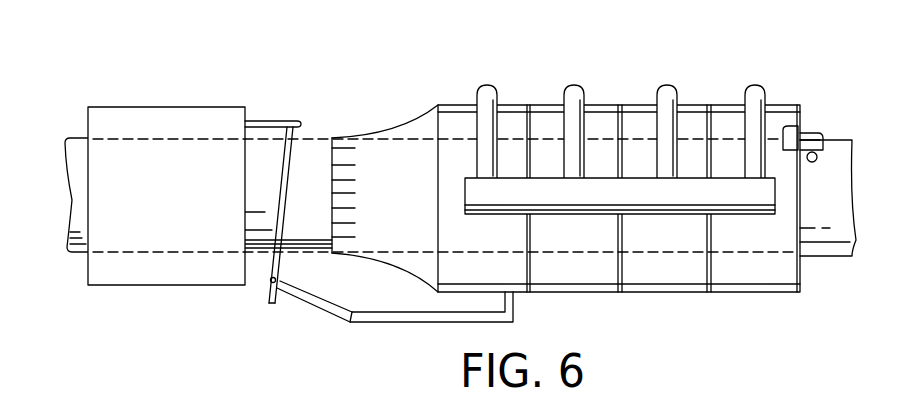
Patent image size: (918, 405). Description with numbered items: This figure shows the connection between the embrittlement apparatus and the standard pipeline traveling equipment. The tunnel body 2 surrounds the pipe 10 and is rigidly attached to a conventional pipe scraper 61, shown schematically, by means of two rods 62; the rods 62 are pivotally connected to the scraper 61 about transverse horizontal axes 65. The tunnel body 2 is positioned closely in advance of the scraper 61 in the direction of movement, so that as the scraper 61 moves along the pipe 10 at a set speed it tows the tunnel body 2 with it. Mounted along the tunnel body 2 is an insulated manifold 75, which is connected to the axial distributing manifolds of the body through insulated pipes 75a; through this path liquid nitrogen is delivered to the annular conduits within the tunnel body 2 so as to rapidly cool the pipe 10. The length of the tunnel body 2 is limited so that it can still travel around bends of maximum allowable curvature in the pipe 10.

The tunnel body 2 is at (621, 90).
The pipe 10 is at (313, 152).
The pipe scraper 61 is at (201, 96).
The rods 62 is at (348, 317).
The transverse horizontal axes 65 is at (268, 284).
The insulated manifold 75 is at (580, 200).
The insulated pipes 75a is at (484, 90).